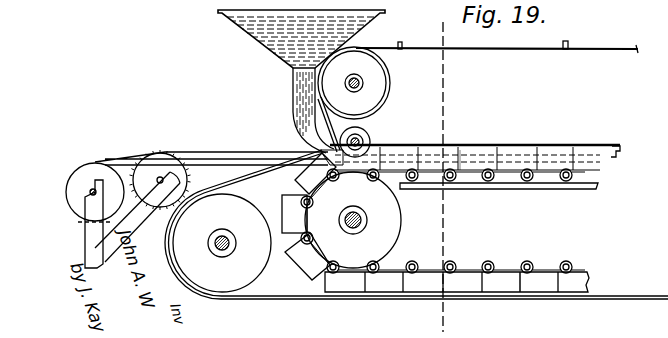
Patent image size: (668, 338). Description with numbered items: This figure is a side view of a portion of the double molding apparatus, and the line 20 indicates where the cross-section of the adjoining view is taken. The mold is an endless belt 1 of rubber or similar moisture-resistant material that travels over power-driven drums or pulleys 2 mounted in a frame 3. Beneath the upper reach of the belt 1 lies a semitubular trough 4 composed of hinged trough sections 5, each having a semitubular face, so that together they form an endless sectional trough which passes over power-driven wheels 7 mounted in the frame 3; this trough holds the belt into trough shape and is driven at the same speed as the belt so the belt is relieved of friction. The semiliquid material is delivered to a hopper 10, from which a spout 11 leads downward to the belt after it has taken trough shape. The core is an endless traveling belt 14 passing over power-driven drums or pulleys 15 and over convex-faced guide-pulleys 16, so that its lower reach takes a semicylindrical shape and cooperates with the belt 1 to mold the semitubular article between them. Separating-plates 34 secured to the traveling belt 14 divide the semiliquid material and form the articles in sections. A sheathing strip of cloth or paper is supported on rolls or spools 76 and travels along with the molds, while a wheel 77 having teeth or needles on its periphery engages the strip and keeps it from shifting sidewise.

The endless belt 1 is at (284, 180).
The power-driven drums or pulleys 2 is at (222, 243).
The frame 3 is at (465, 160).
The semitubular trough 4 is at (522, 151).
The trough sections 5 is at (532, 282).
The power-driven wheels 7 is at (443, 221).
The hopper 10 is at (357, 30).
The spout 11 is at (296, 104).
The endless traveling belt 14 is at (541, 52).
The power-driven drums or pulleys 15 is at (372, 84).
The guide-pulleys 16 is at (371, 136).
The section line 20 is at (443, 173).
The separating-plates 34 is at (403, 47).
The rolls or spools 76 is at (93, 172).
The wheel 77 is at (172, 171).